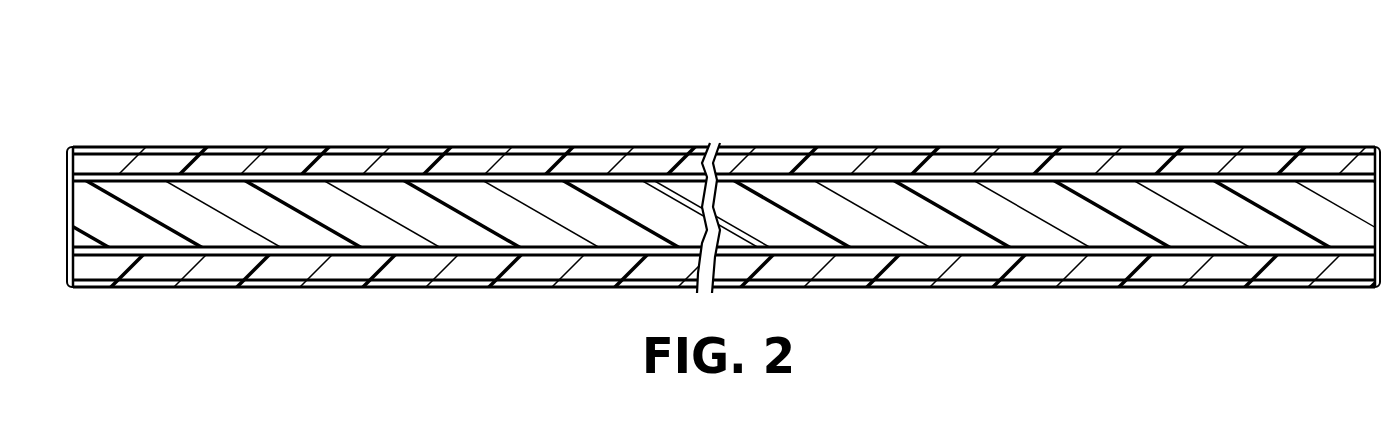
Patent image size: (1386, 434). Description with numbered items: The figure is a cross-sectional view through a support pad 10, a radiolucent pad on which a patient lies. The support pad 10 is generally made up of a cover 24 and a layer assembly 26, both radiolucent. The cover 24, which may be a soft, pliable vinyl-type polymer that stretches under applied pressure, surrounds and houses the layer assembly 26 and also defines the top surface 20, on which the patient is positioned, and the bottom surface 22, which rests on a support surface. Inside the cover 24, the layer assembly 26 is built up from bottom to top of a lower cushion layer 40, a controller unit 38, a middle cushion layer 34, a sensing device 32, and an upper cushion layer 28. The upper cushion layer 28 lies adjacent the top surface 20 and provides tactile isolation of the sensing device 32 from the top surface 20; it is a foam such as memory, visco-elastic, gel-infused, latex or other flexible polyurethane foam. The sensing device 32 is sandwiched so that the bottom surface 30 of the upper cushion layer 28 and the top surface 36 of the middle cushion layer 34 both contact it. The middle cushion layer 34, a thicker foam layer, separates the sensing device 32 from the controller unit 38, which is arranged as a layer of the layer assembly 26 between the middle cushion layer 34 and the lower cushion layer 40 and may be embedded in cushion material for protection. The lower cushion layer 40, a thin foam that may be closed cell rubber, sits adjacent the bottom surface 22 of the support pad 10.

The support pad 10 is at (1250, 127).
The top surface 20 is at (988, 148).
The bottom surface 22 is at (553, 288).
The cover 24 is at (863, 147).
The layer assembly 26 is at (776, 157).
The upper cushion layer 28 is at (1325, 165).
The bottom surface of upper cushion layer 30 is at (293, 178).
The sensing device 32 is at (600, 167).
The middle cushion layer 34 is at (1303, 210).
The top surface of middle cushion layer 36 is at (280, 176).
The controller unit 38 is at (1203, 255).
The lower cushion layer 40 is at (1152, 273).